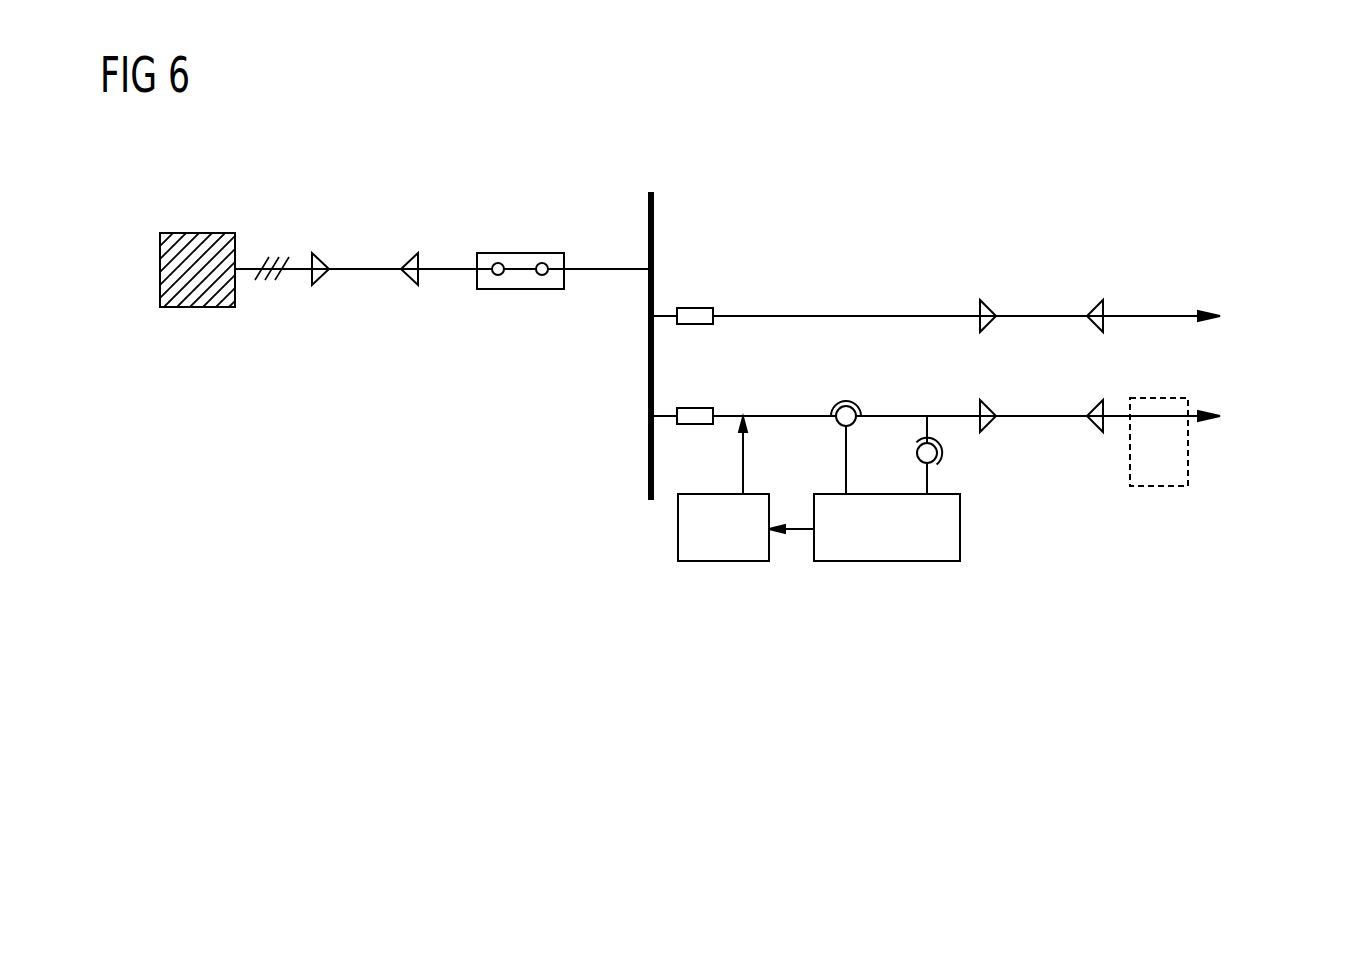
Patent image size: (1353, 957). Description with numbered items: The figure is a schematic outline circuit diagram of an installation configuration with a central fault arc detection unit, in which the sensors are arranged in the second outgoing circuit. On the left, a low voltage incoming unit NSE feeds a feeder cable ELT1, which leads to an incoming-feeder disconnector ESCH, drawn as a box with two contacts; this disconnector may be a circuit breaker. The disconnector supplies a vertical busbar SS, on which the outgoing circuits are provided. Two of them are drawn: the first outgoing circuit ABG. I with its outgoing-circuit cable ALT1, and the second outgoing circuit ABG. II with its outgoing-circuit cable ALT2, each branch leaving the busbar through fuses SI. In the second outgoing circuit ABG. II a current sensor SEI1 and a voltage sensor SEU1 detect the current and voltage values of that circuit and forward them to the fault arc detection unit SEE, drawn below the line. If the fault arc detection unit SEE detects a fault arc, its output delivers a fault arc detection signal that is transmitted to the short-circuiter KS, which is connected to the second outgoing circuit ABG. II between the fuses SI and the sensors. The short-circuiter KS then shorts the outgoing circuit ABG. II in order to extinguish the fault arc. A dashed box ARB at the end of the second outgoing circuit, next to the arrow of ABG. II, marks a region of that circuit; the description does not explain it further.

The low voltage incoming unit NSE is at (194, 250).
The feeder cable ELT1 is at (366, 268).
The incoming-feeder disconnector ESCH is at (519, 252).
The busbar SS is at (655, 210).
The fuses SI is at (696, 306).
The outgoing-circuit cable ALT1 is at (1047, 315).
The outgoing-circuit cable ALT2 is at (1047, 415).
The outgoing circuit ABG. I is at (1249, 318).
The outgoing circuit ABG. II is at (1252, 418).
The current sensor SEI1 is at (849, 427).
The voltage sensor SEU1 is at (921, 433).
The short-circuiter KS is at (723, 489).
The fault arc detection unit SEE is at (864, 527).
The arc fault region / work area ARB is at (1159, 488).